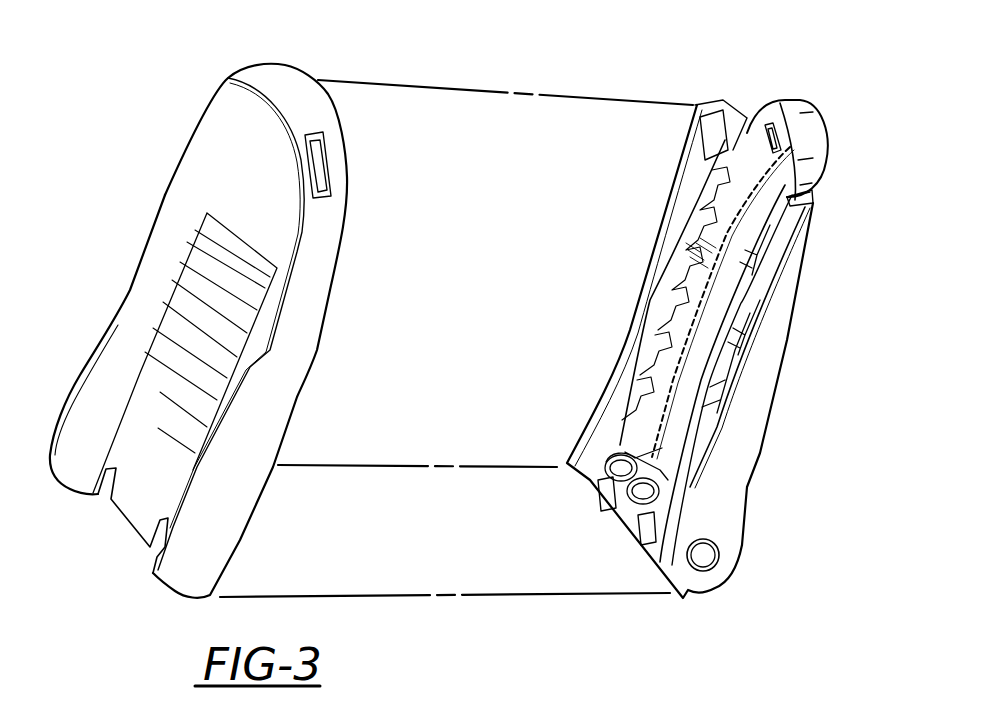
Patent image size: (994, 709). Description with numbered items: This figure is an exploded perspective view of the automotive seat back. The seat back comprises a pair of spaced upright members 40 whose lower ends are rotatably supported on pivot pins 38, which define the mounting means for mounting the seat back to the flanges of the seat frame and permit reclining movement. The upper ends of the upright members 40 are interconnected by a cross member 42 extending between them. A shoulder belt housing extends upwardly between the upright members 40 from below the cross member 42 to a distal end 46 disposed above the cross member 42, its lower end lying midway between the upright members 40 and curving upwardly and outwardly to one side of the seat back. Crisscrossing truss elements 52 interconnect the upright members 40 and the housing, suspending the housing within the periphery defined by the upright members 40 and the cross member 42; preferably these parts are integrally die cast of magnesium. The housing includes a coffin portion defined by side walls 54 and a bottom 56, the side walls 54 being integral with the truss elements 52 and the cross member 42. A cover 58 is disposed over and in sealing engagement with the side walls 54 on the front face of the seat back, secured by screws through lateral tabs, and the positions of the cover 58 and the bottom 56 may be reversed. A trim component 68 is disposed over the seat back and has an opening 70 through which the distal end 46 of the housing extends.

The pivot pins 38 is at (706, 562).
The upright members 40 is at (617, 395).
The cross member 42 is at (725, 113).
The distal end 46 is at (818, 146).
The truss elements 52 is at (653, 313).
The side walls 54 is at (697, 434).
The bottom 56 is at (792, 197).
The cover 58 is at (710, 221).
The trim component 68 is at (173, 192).
The opening 70 is at (320, 162).